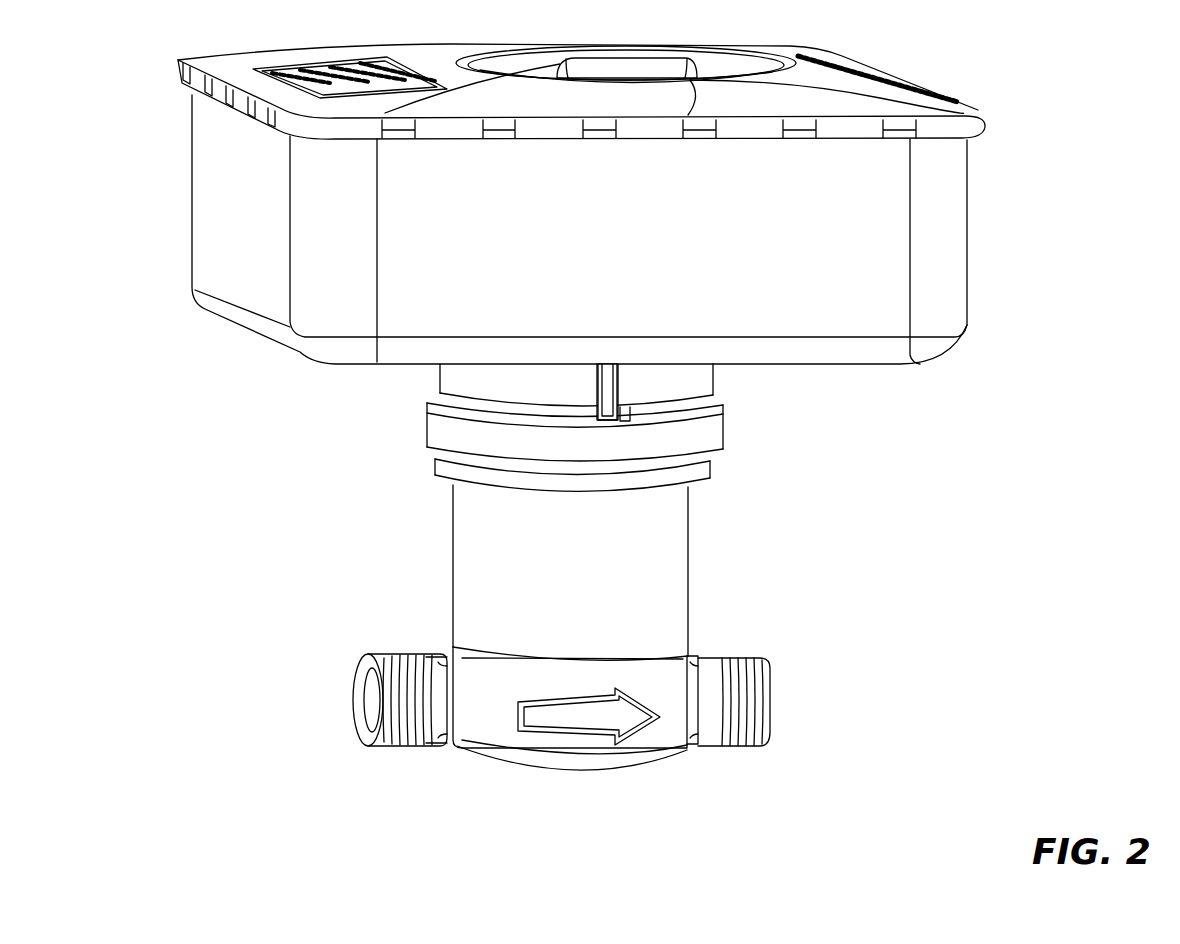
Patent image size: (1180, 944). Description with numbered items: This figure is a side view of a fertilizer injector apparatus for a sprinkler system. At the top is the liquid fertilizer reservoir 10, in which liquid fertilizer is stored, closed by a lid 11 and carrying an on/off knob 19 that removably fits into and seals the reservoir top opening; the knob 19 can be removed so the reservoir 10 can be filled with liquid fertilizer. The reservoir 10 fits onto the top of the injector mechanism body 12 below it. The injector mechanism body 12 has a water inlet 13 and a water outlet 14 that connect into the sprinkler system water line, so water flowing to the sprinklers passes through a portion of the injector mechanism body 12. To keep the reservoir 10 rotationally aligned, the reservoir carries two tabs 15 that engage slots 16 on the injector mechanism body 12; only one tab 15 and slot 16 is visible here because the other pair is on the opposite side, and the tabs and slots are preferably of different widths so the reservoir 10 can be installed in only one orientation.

The liquid fertilizer reservoir 10 is at (847, 256).
The lid 11 is at (950, 106).
The on/off knob 19 is at (632, 70).
The injector mechanism body 12 is at (630, 562).
The water inlet 13 is at (350, 710).
The water outlet 14 is at (768, 668).
The tab 15 is at (612, 392).
The slot 16 is at (625, 415).